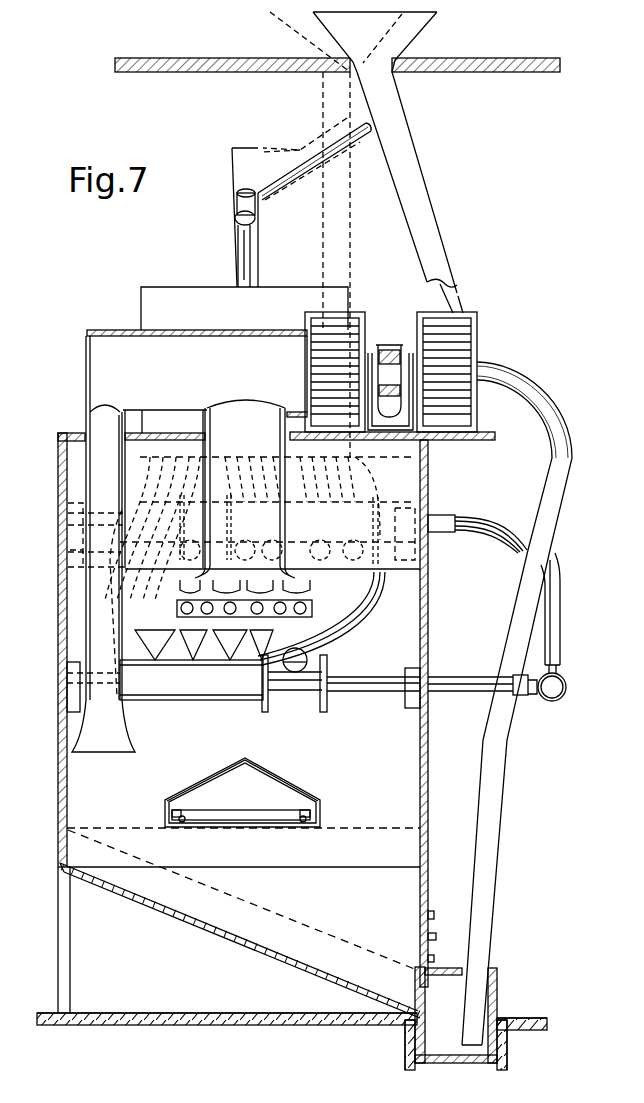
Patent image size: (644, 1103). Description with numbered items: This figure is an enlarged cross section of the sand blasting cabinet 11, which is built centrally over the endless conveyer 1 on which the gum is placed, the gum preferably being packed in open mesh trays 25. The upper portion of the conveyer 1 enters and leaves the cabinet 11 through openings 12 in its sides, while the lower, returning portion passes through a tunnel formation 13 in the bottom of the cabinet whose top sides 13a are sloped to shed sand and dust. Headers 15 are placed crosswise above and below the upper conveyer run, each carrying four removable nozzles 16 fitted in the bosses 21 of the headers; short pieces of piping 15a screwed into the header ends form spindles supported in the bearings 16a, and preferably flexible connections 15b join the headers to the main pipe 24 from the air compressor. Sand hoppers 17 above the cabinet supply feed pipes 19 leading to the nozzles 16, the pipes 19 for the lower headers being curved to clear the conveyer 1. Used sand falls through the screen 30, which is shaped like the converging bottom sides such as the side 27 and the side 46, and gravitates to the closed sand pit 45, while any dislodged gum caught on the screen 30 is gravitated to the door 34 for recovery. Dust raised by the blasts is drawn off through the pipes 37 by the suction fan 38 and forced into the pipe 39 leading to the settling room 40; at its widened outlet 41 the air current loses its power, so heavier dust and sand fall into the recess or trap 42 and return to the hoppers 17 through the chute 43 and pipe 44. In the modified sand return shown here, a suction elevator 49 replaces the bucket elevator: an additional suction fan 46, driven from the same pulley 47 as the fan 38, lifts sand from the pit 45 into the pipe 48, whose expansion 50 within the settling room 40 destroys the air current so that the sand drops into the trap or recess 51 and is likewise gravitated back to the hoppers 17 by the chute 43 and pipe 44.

The endless conveyer 1 is at (307, 647).
The cabinet 11 is at (58, 495).
The openings 12 is at (258, 578).
The tunnel formation 13 is at (242, 792).
The top sides of the tunnel formation 13a is at (273, 770).
The headers 15 is at (150, 682).
The short pieces of piping 15a is at (435, 525).
The connections 15b is at (553, 580).
The nozzles 16 is at (248, 650).
The bearings 16a is at (447, 660).
The sand hoppers 17 is at (244, 308).
The feed pipes 19 is at (53, 603).
The bosses 21 is at (323, 667).
The main pipe 24 is at (566, 688).
The trays 25 is at (321, 618).
The side 27 is at (317, 896).
The screen 30 is at (317, 930).
The door 34 is at (436, 928).
The pipes 37 is at (189, 541).
The suction fan 38 is at (330, 352).
The pipe 39 is at (322, 221).
The settling room 40 is at (337, 49).
The outlet 41 is at (312, 40).
The recess or trap 42 is at (347, 118).
The chute 43 is at (250, 157).
The pipe 44 is at (243, 238).
The sand pit 45 is at (485, 987).
The side / additional suction fan 46 is at (450, 355).
The pulley 47 is at (388, 365).
The pipe 48 is at (413, 190).
The suction elevator 49 is at (500, 748).
The expansion 50 is at (410, 28).
The trap or recess 51 is at (368, 128).